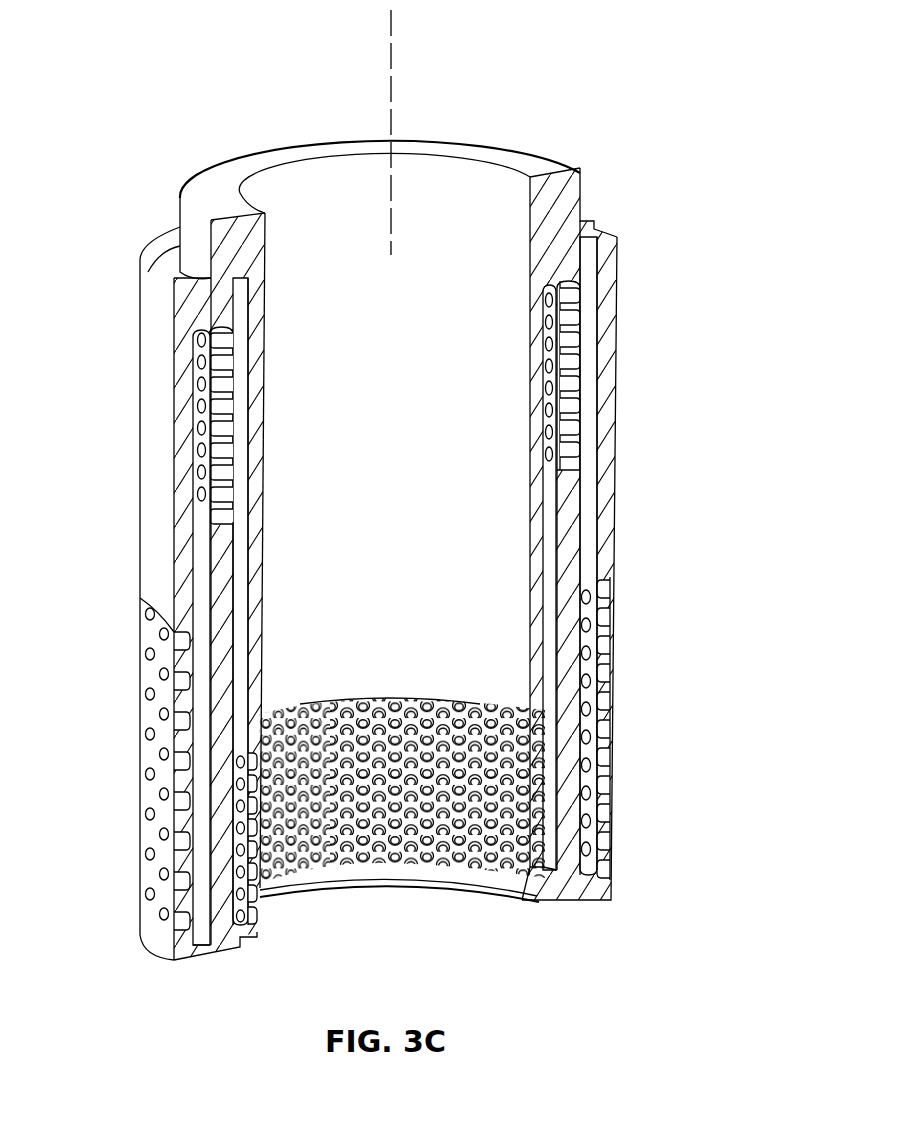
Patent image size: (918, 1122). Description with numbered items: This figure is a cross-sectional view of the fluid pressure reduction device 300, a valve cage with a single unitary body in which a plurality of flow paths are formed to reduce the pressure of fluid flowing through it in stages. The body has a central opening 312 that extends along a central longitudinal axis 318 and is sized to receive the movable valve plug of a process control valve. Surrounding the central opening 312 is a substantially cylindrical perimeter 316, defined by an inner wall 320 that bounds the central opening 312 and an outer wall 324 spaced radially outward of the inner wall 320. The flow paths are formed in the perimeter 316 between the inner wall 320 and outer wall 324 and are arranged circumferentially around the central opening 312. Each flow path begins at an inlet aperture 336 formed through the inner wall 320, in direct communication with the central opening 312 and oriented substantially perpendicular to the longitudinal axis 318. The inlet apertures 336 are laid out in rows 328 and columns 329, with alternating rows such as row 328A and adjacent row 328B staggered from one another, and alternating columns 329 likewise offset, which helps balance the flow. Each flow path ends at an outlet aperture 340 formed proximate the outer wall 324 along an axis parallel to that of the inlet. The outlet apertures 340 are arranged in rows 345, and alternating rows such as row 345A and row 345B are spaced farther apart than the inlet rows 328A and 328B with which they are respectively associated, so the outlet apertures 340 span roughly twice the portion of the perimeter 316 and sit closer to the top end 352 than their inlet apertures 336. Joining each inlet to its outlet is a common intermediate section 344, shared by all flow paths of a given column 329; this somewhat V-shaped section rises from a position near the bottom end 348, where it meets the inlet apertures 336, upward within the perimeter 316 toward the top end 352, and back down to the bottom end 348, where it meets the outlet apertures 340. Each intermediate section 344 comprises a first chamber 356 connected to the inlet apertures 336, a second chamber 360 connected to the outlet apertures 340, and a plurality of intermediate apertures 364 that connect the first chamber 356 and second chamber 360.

The fluid pressure reduction device 300 is at (643, 126).
The central opening 312 is at (340, 186).
The substantially cylindrical perimeter 316 is at (538, 158).
The central longitudinal axis 318 is at (393, 45).
The inner wall 320 is at (530, 228).
The outer wall 324 is at (176, 410).
The rows of inlet apertures 328 is at (153, 838).
The row of inlet apertures 328A is at (233, 780).
The row of inlet apertures 328B is at (233, 800).
The columns of inlet apertures 329 is at (355, 686).
The inlet aperture 336 is at (538, 753).
The outlet aperture 340 is at (590, 566).
The intermediate section 344 is at (173, 532).
The rows of outlet apertures 345 is at (120, 764).
The row of outlet apertures 345A is at (178, 648).
The row of outlet apertures 345B is at (178, 688).
The bottom end 348 is at (565, 905).
The top end 352 is at (560, 180).
The first chamber 356 is at (549, 513).
The second chamber 360 is at (592, 438).
The intermediate apertures 364 is at (570, 330).